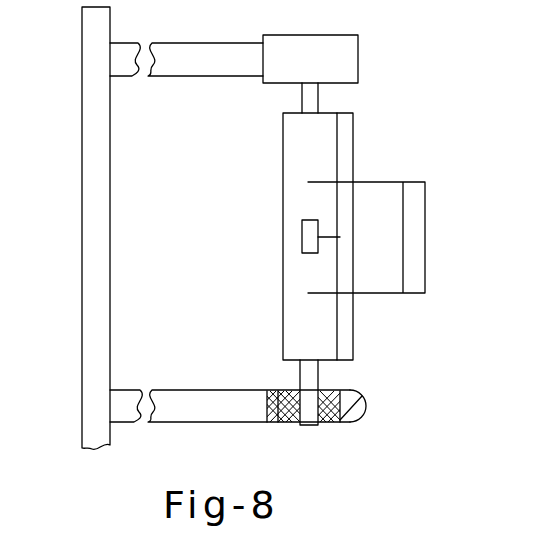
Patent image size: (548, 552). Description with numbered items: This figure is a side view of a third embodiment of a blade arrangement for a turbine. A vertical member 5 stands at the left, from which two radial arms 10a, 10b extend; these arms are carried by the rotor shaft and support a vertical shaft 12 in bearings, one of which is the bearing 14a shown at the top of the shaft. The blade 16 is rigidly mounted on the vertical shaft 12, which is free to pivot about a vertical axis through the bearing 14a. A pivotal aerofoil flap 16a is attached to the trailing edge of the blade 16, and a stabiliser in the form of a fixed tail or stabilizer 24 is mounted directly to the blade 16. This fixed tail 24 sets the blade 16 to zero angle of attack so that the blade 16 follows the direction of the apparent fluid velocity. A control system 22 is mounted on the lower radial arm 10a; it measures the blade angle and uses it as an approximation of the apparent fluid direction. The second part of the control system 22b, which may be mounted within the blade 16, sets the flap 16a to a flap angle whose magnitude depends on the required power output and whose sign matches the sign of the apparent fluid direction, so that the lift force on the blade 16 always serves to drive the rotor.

The support panel 5 is at (92, 141).
The radial arm 10a is at (178, 402).
The radial arm 10b is at (183, 53).
The vertical shaft 12 is at (318, 98).
The bearing 14a is at (333, 48).
The blade 16 is at (295, 312).
The aerofoil flap 16a is at (342, 340).
The control system 22 is at (332, 423).
The second part of the control system 22b is at (300, 243).
The fixed tail or stabilizer 24 is at (413, 271).